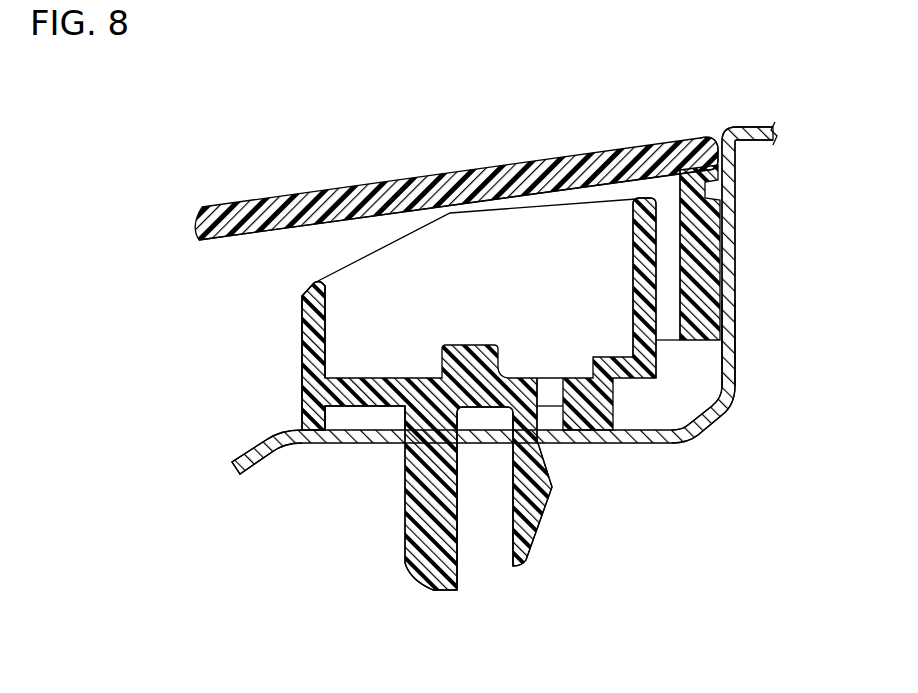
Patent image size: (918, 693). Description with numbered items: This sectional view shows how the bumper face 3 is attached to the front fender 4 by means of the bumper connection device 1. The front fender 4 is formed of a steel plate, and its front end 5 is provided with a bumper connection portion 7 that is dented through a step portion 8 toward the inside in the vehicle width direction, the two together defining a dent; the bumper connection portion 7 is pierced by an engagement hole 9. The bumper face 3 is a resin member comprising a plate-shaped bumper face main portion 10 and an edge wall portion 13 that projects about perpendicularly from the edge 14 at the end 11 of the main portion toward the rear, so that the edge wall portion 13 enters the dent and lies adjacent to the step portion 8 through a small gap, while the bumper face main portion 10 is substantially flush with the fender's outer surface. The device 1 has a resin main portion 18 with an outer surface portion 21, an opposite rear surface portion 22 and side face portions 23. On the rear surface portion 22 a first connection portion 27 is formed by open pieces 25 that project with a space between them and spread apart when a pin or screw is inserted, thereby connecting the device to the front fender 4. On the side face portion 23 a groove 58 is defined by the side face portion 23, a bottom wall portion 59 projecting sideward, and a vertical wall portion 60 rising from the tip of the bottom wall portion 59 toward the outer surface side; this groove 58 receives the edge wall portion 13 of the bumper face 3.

The bumper connection device 1 is at (193, 337).
The bumper face 3 is at (287, 184).
The bumper face main portion 10 is at (331, 189).
The end of the bumper face main portion 11 is at (444, 174).
The edge wall portion 13 is at (677, 197).
The edge of the bumper face main portion 14 is at (703, 136).
The front fender 4 is at (746, 203).
The front end of the front fender 5 is at (748, 126).
The step portion 8 is at (737, 240).
The groove 58 is at (718, 352).
The bottom wall portion 59 is at (706, 395).
The vertical wall portion 60 is at (712, 302).
The bumper connection portion 7 is at (278, 446).
The engagement hole 9 is at (413, 440).
The main portion 18 is at (302, 387).
The outer surface portion 21 is at (400, 240).
The rear surface portion 22 is at (367, 398).
The side face portion 23 is at (310, 318).
The open piece 25 is at (430, 533).
The first connection portion 27 is at (538, 588).